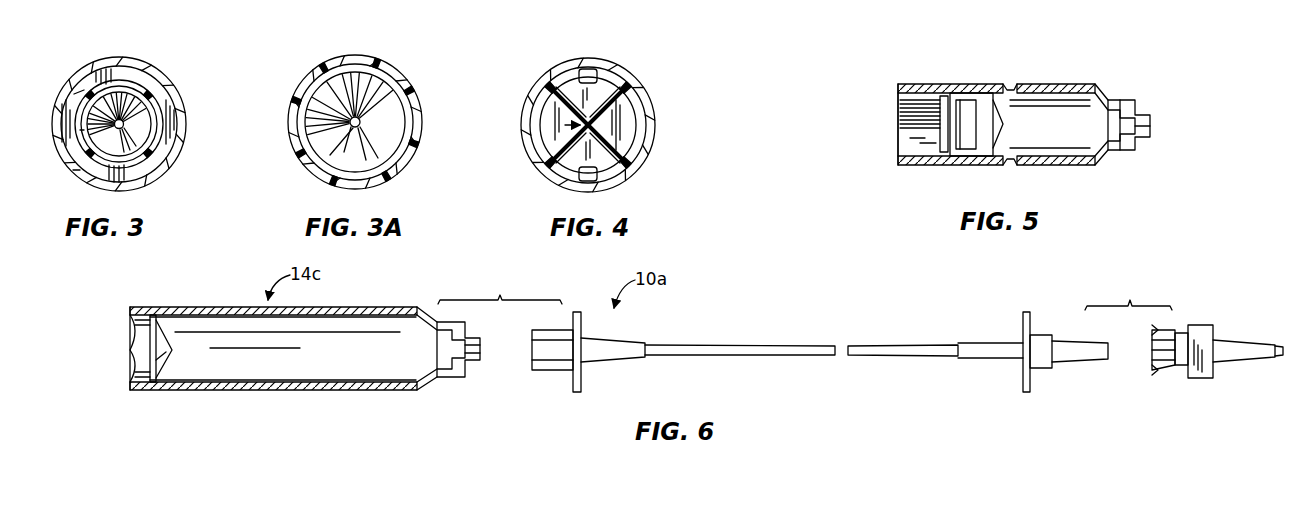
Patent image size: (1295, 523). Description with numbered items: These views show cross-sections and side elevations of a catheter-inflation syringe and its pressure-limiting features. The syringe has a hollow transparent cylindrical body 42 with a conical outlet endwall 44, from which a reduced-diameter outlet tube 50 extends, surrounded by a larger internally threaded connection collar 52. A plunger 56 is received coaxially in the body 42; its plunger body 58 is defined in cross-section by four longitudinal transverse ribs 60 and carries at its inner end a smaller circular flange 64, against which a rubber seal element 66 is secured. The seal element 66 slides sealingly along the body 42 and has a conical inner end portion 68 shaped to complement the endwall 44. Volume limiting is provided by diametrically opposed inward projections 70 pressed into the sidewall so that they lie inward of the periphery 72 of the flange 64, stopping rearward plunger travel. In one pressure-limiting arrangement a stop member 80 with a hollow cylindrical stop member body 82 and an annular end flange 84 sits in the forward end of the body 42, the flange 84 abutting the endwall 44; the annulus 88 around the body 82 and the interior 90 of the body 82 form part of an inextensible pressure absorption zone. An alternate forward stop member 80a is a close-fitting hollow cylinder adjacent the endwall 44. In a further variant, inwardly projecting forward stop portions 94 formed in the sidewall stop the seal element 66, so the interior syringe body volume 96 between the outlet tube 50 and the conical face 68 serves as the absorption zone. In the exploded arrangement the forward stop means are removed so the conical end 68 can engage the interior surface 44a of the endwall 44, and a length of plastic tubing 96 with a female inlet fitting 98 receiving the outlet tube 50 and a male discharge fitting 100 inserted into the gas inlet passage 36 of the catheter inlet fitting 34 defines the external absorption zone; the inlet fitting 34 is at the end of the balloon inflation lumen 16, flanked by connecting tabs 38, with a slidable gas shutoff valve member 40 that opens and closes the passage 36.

In FIG. 6, the balloon inflation lumen 16 is at (1263, 382).
In FIG. 6, the inlet fitting 34 is at (1240, 377).
In FIG. 6, the gas inlet passage 36 is at (1150, 365).
In FIG. 6, the connecting tabs 38 is at (1129, 358).
In FIG. 6, the gas shutoff valve member 40 is at (1221, 335).
In FIG. 3, the syringe body 42 is at (119, 103).
In FIG. 3A, the syringe body 42 is at (355, 101).
In FIG. 5, the syringe body 42 is at (939, 98).
In FIG. 3, the outlet endwall 44 is at (154, 129).
In FIG. 3A, the outlet endwall 44 is at (386, 116).
In FIG. 5, the outlet endwall 44 is at (1083, 139).
In FIG. 6, the outlet endwall 44 is at (305, 364).
In FIG. 6, the interior surface of outlet endwall 44a is at (284, 348).
In FIG. 3, the outlet tube 50 is at (92, 79).
In FIG. 3A, the outlet tube 50 is at (325, 78).
In FIG. 5, the outlet tube 50 is at (1160, 101).
In FIG. 6, the outlet tube 50 is at (488, 331).
In FIG. 5, the connection collar 52 is at (1132, 102).
In FIG. 6, the connection collar 52 is at (500, 290).
In FIG. 5, the plunger 56 is at (903, 139).
In FIG. 4, the plunger body 58 is at (530, 137).
In FIG. 4, the transverse ribs 60 is at (580, 123).
In FIG. 4, the inner end flange 64 is at (611, 125).
In FIG. 5, the plunger seal element 66 is at (959, 143).
In FIG. 6, the plunger seal element 66 is at (164, 325).
In FIG. 5, the conical inner end portion 68 is at (1024, 124).
In FIG. 6, the conical inner end portion 68 is at (173, 372).
In FIG. 4, the inward projections 70 is at (566, 108).
In FIG. 4, the periphery of plunger body flange 72 is at (606, 112).
In FIG. 3, the stop member 80 is at (140, 107).
In FIG. 3A, the alternate forward stop member 80a is at (374, 116).
In FIG. 3, the stop member body 82 is at (49, 132).
In FIG. 3, the annular end flange 84 is at (144, 125).
In FIG. 3, the annulus 88 is at (49, 76).
In FIG. 3, the interior of stop member body 90 is at (54, 172).
In FIG. 5, the forward stop portions 94 is at (1027, 117).
In FIG. 5, the interior syringe body volume / plastic tubing 96 is at (1056, 93).
In FIG. 6, the interior syringe body volume / plastic tubing 96 is at (834, 329).
In FIG. 6, the female inlet fitting 98 is at (586, 355).
In FIG. 6, the male discharge fitting 100 is at (1065, 356).